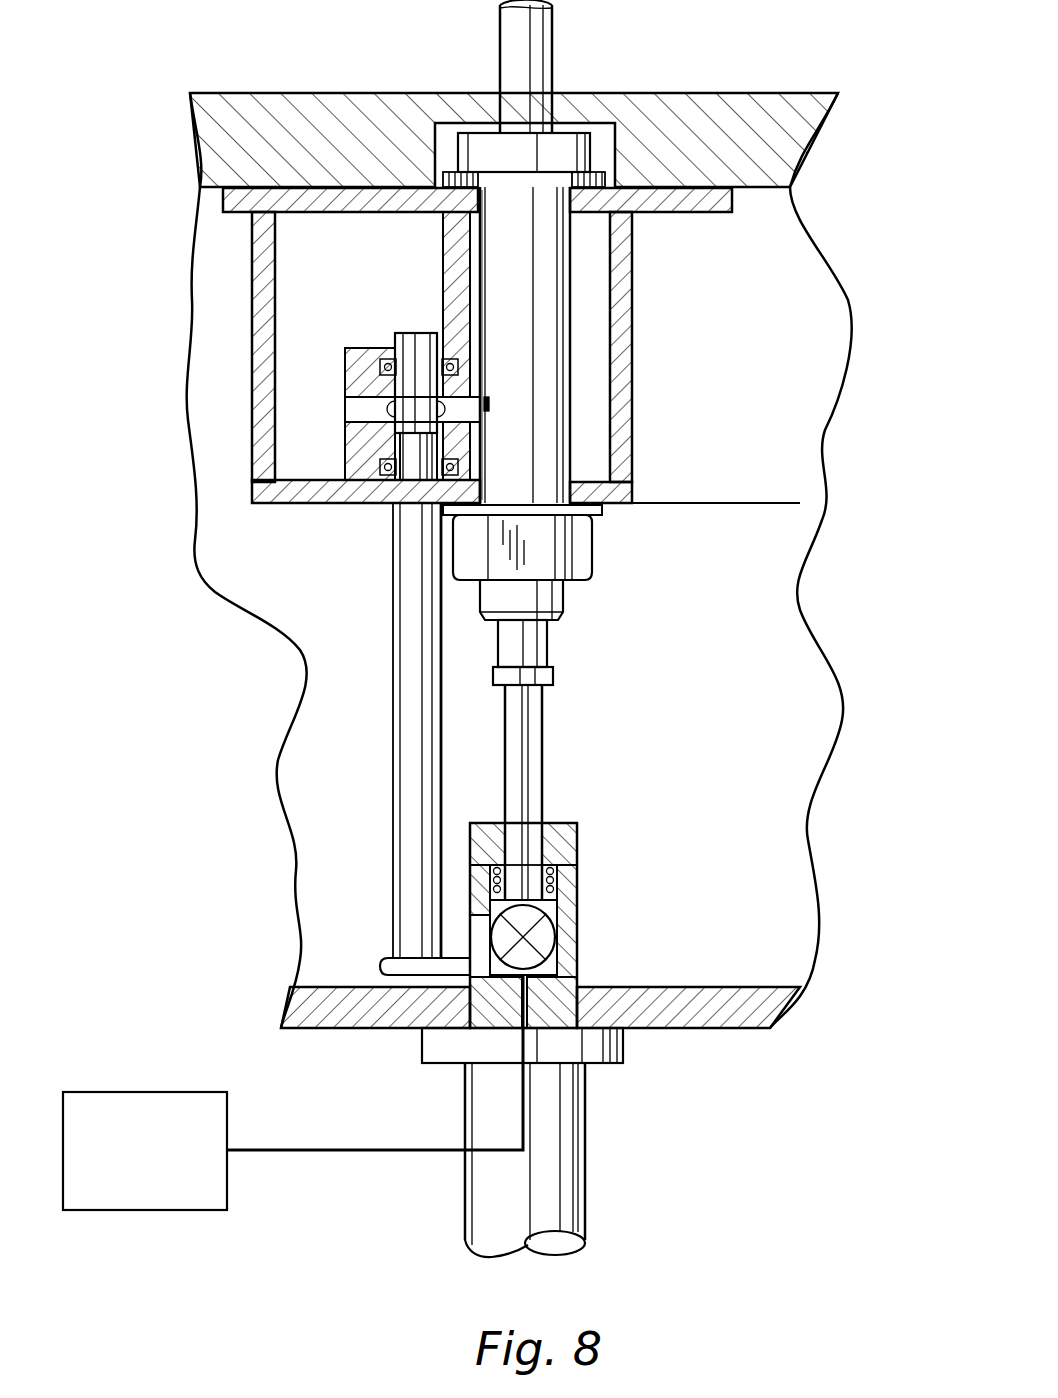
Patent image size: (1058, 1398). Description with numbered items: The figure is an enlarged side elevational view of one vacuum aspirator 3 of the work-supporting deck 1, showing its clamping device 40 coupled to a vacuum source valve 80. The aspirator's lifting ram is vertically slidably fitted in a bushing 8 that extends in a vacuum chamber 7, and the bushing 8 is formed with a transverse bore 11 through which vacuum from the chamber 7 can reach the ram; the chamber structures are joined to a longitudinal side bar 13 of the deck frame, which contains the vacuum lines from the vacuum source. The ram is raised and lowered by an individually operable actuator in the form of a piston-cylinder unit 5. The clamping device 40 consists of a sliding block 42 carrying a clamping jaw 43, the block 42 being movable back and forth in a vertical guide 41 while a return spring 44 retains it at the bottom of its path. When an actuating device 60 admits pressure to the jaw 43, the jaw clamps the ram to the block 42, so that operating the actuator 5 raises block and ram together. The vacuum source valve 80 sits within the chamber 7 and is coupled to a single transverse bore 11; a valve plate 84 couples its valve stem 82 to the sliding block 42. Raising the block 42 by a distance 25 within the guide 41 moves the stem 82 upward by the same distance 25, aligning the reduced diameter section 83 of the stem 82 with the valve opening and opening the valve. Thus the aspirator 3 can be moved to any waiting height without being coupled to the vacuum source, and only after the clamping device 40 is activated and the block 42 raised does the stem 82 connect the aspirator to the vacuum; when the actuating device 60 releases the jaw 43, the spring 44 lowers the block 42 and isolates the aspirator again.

The work-supporting deck 1 is at (731, 120).
The vacuum aspirator 3 is at (249, 297).
The piston-cylinder unit 5 is at (512, 1168).
The vacuum chamber 7 is at (470, 297).
The bushing 8 is at (545, 292).
The transverse bore 11 is at (489, 403).
The longitudinal side bar 13 is at (787, 303).
The distance 25 is at (318, 442).
The clamping device 40 is at (597, 981).
The vertical guide 41 is at (549, 873).
The sliding block 42 is at (560, 947).
The clamping jaw 43 is at (545, 932).
The return spring 44 is at (548, 886).
The actuating device 60 is at (293, 1092).
The vacuum source valve 80 is at (372, 333).
The valve stem 82 is at (417, 709).
The reduced diameter section 83 is at (412, 482).
The valve plate 84 is at (385, 958).